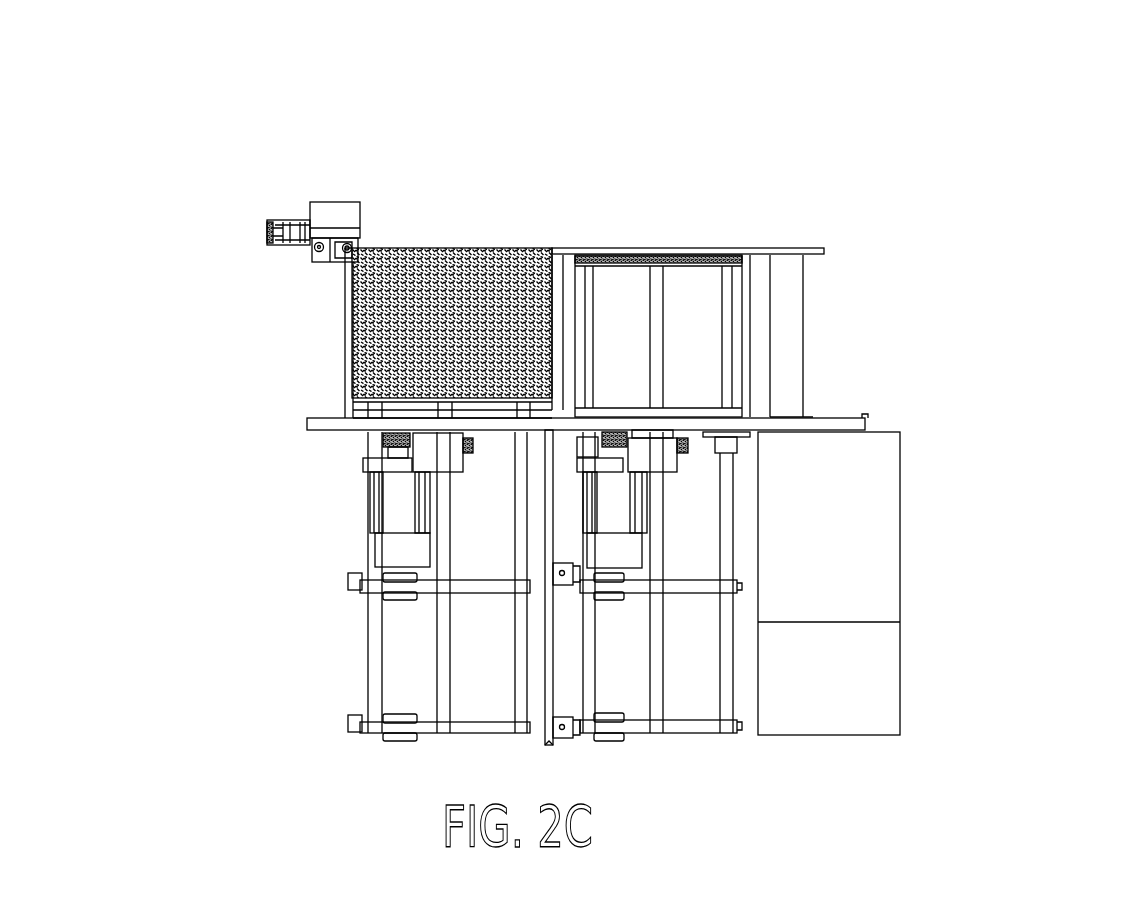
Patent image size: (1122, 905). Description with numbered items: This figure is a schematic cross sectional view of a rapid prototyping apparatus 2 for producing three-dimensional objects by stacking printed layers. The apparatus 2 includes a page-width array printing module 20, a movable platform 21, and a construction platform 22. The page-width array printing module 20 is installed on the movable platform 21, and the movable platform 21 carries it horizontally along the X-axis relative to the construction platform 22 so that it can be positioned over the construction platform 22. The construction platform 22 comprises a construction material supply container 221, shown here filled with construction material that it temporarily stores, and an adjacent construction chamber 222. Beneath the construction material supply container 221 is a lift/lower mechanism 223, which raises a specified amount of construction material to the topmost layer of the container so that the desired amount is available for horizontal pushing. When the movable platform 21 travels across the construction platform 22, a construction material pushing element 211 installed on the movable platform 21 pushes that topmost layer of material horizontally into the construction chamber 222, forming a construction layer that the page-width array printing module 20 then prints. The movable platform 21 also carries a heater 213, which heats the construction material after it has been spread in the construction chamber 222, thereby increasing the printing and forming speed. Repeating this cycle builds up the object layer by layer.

The rapid prototyping apparatus 2 is at (1090, 173).
The page-width array printing module 20 is at (278, 223).
The movable platform 21 is at (345, 220).
The construction material pushing element 211 is at (340, 250).
The heater 213 is at (315, 250).
The construction platform 22 is at (635, 248).
The construction material supply container 221 is at (490, 265).
The construction chamber 222 is at (688, 250).
The lift/lower mechanism 223 is at (405, 505).